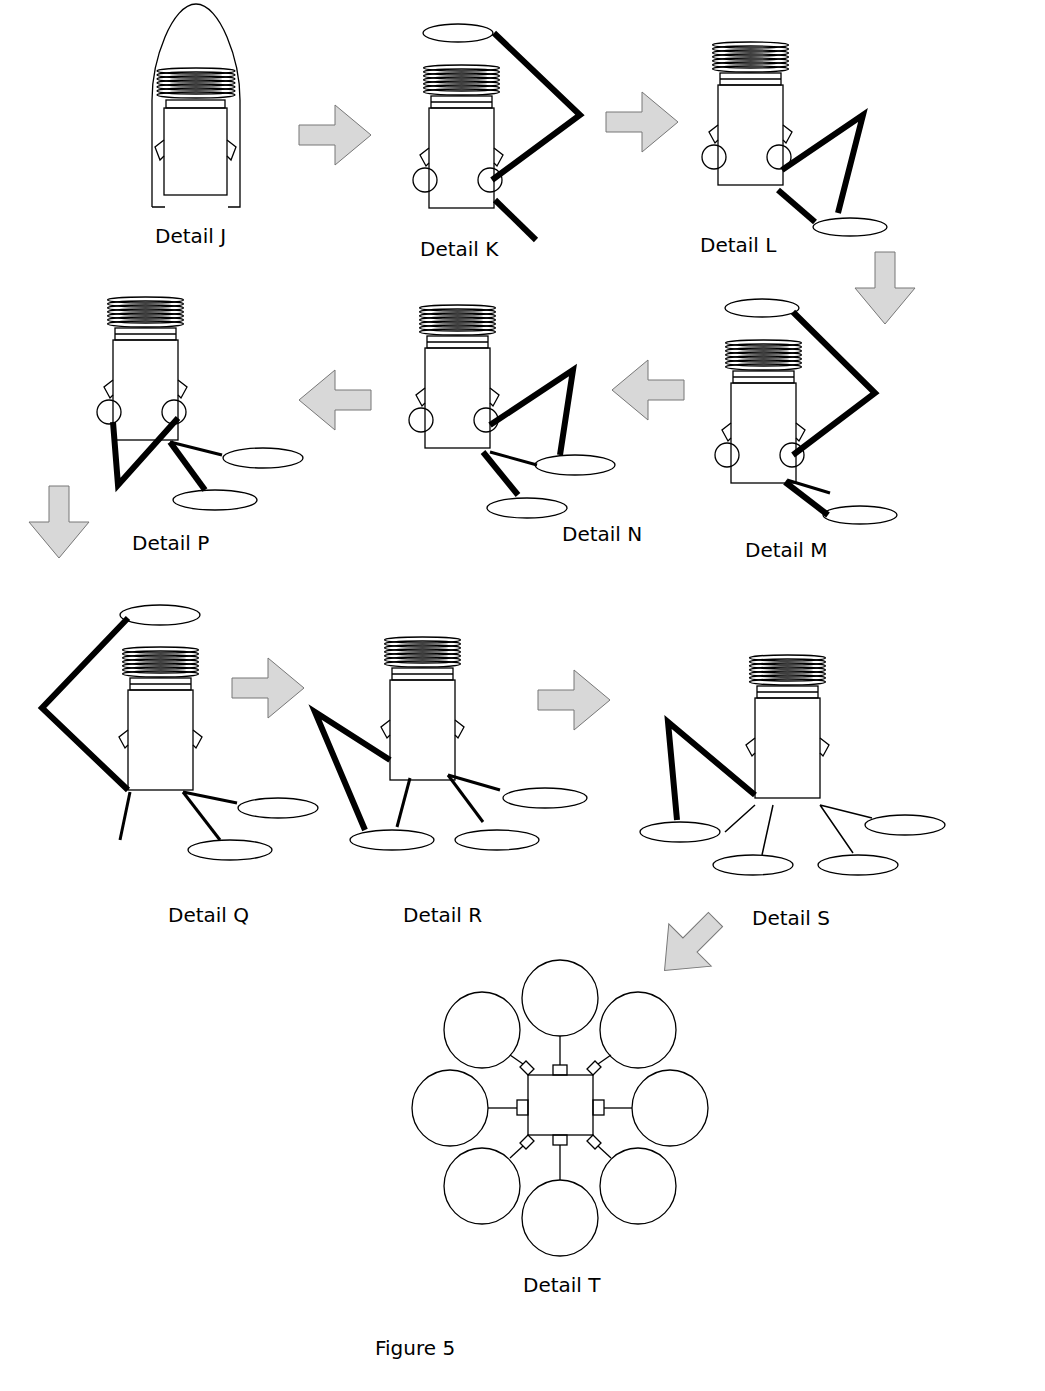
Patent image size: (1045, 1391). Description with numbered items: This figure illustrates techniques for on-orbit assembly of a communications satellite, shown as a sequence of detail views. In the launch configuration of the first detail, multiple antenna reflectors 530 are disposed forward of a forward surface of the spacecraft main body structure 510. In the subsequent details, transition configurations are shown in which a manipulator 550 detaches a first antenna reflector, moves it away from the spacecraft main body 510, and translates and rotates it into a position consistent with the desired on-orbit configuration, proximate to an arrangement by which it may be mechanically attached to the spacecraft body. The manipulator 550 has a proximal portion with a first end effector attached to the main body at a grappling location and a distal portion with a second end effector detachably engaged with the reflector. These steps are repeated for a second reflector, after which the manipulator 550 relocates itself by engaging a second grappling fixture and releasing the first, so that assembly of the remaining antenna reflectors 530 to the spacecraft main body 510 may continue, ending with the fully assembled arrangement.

The spacecraft main body structure 510 is at (190, 152).
The antenna reflectors 530 is at (147, 107).
The manipulator 550 is at (525, 58).